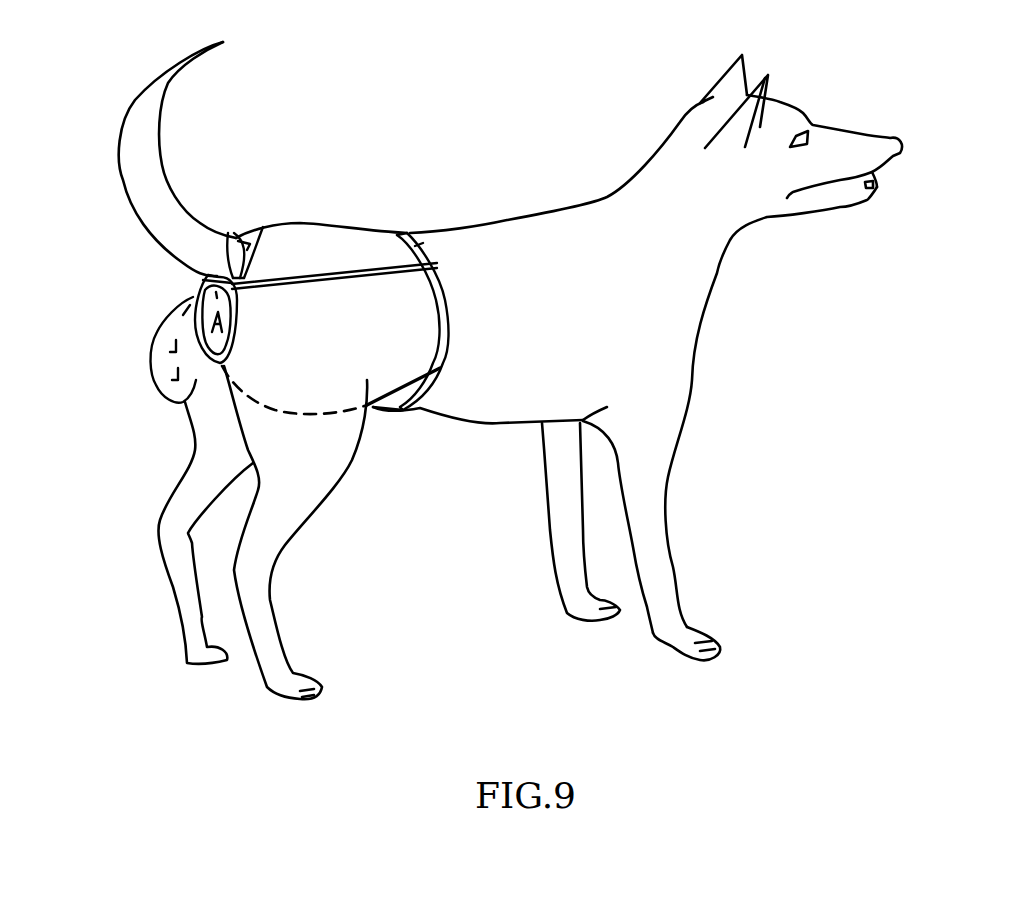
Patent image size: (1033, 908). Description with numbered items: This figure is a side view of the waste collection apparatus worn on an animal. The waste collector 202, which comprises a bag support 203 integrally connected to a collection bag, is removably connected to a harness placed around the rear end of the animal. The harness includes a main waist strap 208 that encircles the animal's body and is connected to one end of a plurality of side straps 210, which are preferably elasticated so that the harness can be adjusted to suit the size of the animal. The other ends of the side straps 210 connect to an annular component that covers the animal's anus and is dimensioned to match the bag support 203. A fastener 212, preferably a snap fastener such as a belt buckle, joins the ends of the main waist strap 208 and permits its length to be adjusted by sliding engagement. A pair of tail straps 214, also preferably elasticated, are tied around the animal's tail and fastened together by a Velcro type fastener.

The waste collector 202 is at (150, 353).
The bag support 203 is at (200, 293).
The main waist strap 208 is at (440, 293).
The side straps 210 is at (370, 273).
The fastener 212 is at (413, 233).
The tail straps 214 is at (263, 230).